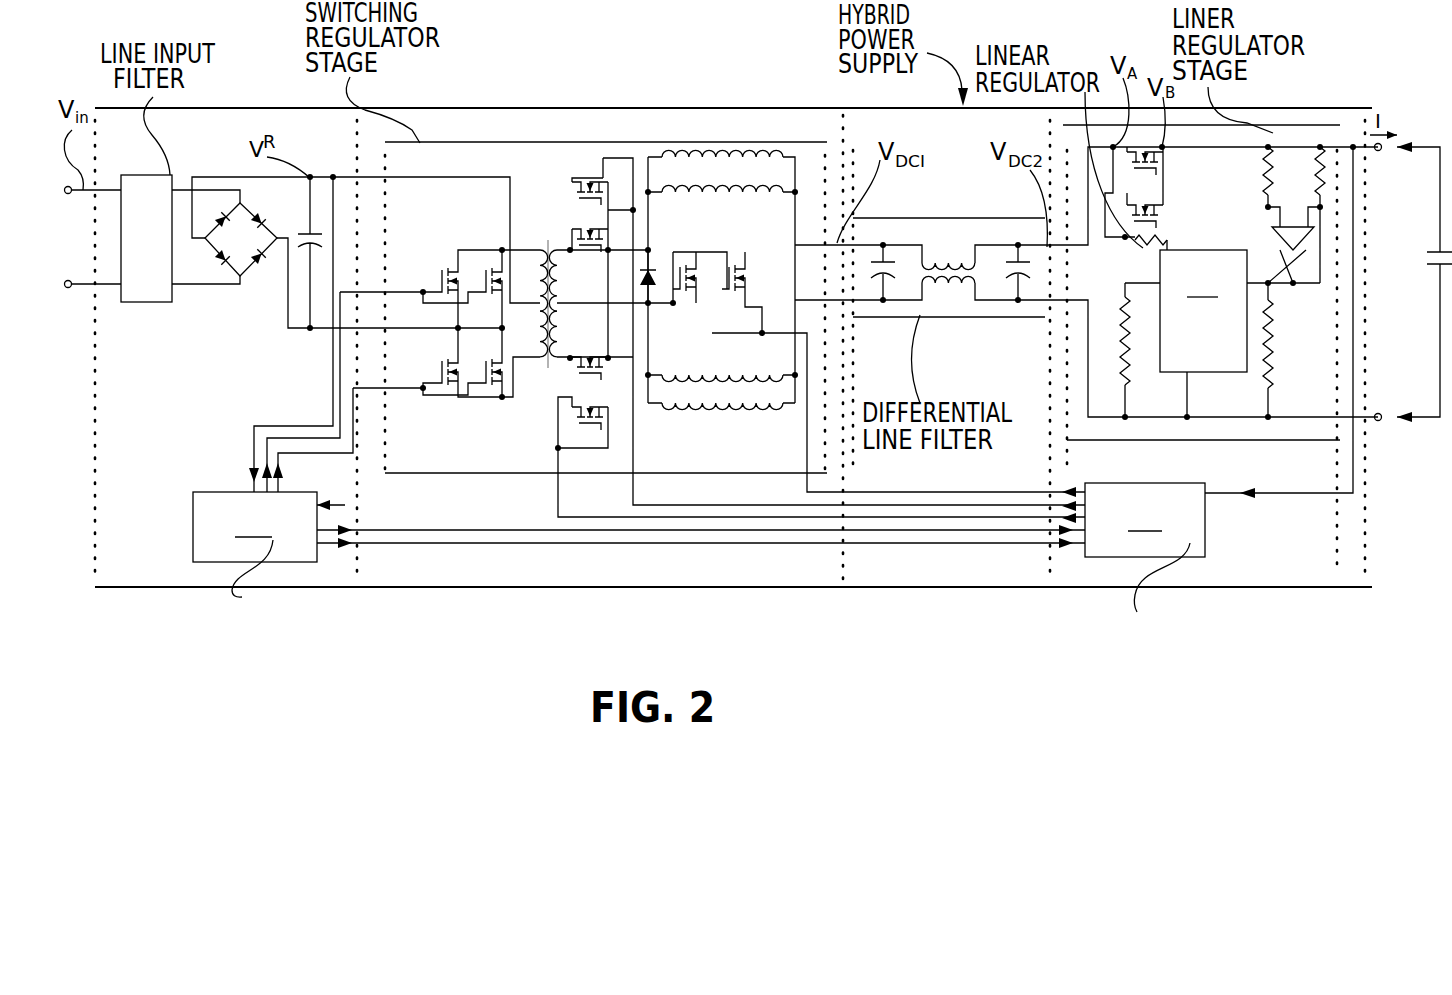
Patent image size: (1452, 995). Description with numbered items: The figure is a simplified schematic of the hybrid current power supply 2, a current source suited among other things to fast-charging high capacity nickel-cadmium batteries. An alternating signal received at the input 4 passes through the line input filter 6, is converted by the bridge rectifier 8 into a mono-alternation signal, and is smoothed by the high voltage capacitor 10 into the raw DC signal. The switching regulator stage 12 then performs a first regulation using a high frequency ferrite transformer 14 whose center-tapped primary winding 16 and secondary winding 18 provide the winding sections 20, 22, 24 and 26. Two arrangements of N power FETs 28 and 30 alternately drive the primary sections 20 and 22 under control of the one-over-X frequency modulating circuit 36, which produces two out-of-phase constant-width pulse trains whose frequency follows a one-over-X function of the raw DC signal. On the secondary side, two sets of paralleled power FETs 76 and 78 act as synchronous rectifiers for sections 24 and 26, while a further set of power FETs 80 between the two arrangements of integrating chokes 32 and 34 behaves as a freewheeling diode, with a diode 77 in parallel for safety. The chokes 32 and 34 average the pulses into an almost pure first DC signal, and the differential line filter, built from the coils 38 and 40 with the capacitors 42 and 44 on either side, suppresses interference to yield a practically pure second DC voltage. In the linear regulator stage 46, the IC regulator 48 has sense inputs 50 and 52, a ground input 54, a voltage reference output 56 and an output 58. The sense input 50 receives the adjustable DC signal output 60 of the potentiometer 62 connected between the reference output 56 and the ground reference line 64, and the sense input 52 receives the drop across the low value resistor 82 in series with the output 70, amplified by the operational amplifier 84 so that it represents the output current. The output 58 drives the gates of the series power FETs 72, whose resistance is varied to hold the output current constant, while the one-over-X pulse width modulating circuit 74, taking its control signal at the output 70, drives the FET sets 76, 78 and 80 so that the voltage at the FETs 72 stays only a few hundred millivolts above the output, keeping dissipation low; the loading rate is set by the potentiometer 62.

The hybrid current power supply 2 is at (694, 78).
The input 4 is at (68, 197).
The line input filter 6 is at (166, 238).
The bridge rectifier 8 is at (253, 293).
The high voltage capacitor 10 is at (307, 233).
The switching regulator stage 12 is at (477, 478).
The high frequency ferrite transformer 14 is at (550, 222).
The primary winding 16 is at (540, 345).
The secondary winding 18 is at (572, 337).
The primary winding section 20 is at (538, 267).
The primary winding section 22 is at (537, 337).
The secondary winding section 24 is at (560, 287).
The secondary winding section 26 is at (562, 323).
The arrangement of N power FETs 28 is at (430, 264).
The arrangement of N power FETs 30 is at (438, 405).
The integrating chokes arrangement 32 is at (700, 205).
The integrating chokes arrangement 34 is at (695, 365).
The 1/X frequency modulating circuit 36 is at (979, 210).
The coil 38 is at (970, 262).
The coil 40 is at (962, 287).
The capacitor 42 is at (881, 268).
The capacitor 44 is at (1015, 280).
The linear regulator stage 46 is at (1226, 452).
The IC regulator 48 is at (1203, 275).
The sense input 50 is at (1162, 350).
The sense input 52 is at (1243, 250).
The ground input 54 is at (1192, 374).
The voltage reference output 56 is at (1160, 270).
The output 58 is at (1180, 248).
The adjustable DC signal output 60 is at (1134, 364).
The potentiometer 62 is at (1128, 358).
The ground reference line 64 is at (1160, 418).
The output 70 is at (1378, 152).
The N power FETs 72 is at (1152, 178).
The 1/X pulse width modulating circuit 74 is at (1191, 593).
The set of N paralleled power FETs 76 is at (597, 170).
The diode 77 is at (650, 282).
The set of N paralleled power FETs 78 is at (602, 447).
The set of paralleled power FETs 80 is at (758, 270).
The low value resistor 82 is at (1290, 150).
The operational amplifier 84 is at (1297, 250).